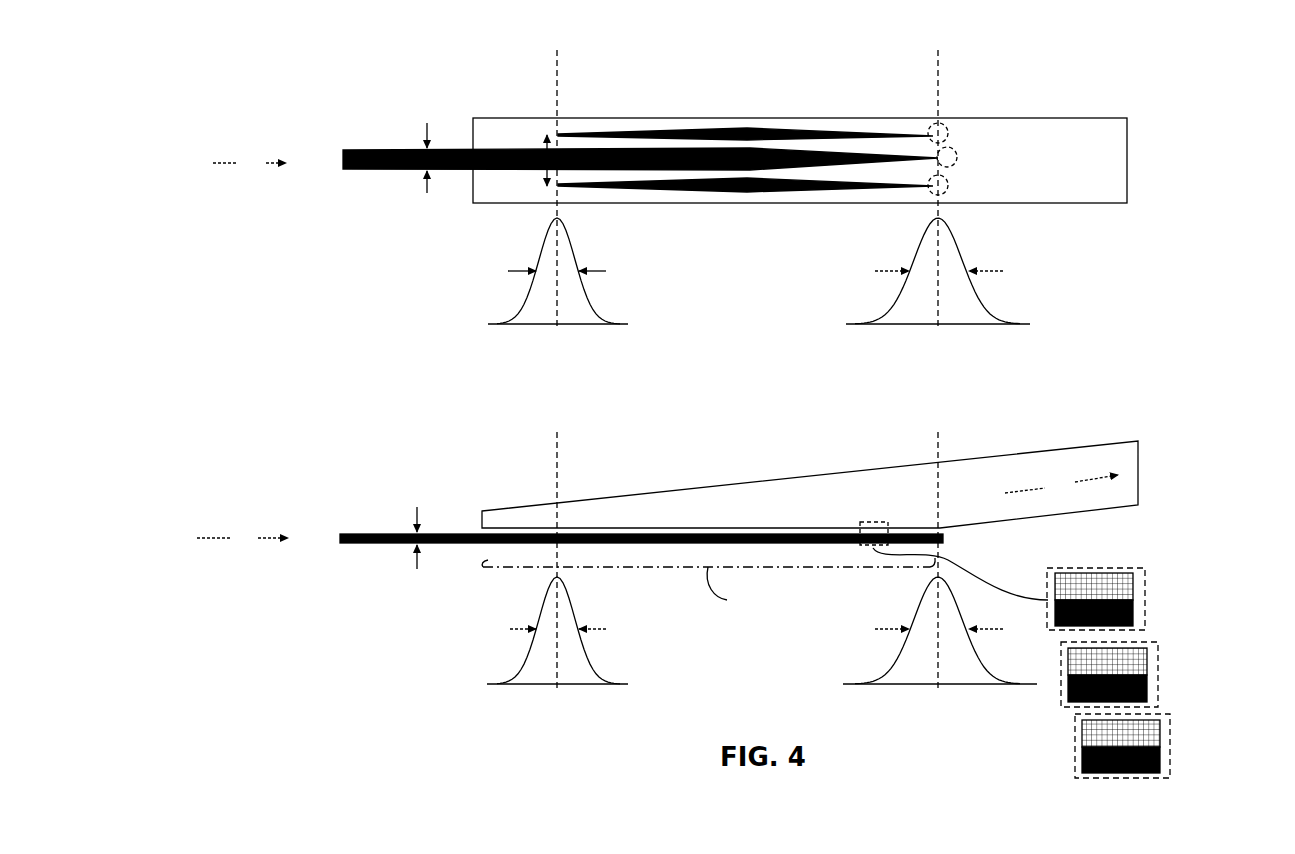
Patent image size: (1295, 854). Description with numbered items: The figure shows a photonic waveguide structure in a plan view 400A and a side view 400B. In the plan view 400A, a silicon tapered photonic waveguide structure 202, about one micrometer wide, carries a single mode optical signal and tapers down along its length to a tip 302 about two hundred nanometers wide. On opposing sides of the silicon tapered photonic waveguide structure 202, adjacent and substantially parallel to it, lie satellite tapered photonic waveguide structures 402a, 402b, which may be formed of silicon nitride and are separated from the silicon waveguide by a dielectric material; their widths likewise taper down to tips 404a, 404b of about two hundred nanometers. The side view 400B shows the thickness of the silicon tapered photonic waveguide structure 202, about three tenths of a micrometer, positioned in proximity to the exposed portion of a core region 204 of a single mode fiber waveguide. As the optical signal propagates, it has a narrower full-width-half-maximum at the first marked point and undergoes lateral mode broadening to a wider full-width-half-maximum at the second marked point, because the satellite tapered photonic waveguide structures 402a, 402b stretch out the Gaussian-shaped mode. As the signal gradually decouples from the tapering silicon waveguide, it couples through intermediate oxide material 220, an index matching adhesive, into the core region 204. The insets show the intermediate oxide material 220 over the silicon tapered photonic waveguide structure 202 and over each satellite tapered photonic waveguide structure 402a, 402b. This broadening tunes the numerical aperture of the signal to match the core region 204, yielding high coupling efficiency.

The plan view 400A is at (279, 55).
The side view 400B is at (288, 473).
The silicon tapered photonic waveguide structure 202 is at (372, 148).
The core region 204 is at (1076, 170).
The intermediate oxide material 220 is at (1133, 587).
The tip 302 is at (957, 160).
The satellite tapered photonic waveguide structure 402a is at (826, 130).
The satellite tapered photonic waveguide structure 402b is at (718, 192).
The tip 404a is at (950, 127).
The tip 404b is at (950, 190).